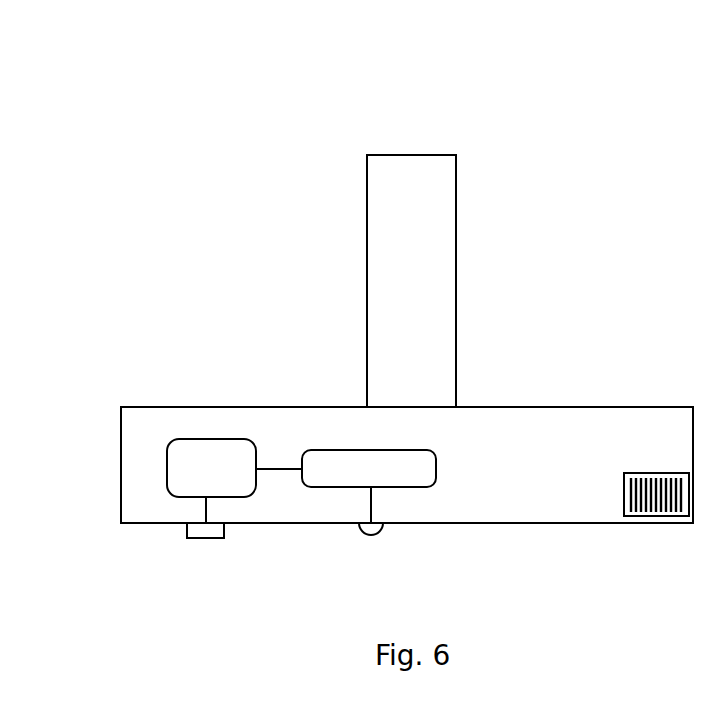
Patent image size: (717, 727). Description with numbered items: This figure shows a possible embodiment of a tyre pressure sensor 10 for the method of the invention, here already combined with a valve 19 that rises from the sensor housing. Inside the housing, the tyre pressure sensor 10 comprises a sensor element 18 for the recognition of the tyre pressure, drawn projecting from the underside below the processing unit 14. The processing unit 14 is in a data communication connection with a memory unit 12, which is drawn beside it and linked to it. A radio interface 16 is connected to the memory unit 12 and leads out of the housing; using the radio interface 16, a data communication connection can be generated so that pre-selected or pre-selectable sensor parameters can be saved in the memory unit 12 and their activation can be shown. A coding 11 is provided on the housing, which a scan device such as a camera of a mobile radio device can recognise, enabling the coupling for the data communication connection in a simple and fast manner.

The tyre pressure sensor 10 is at (533, 118).
The coding 11 is at (637, 516).
The memory unit 12 is at (211, 439).
The processing unit 14 is at (368, 450).
The radio interface 16 is at (205, 538).
The sensor element 18 is at (371, 535).
The valve 19 is at (345, 222).